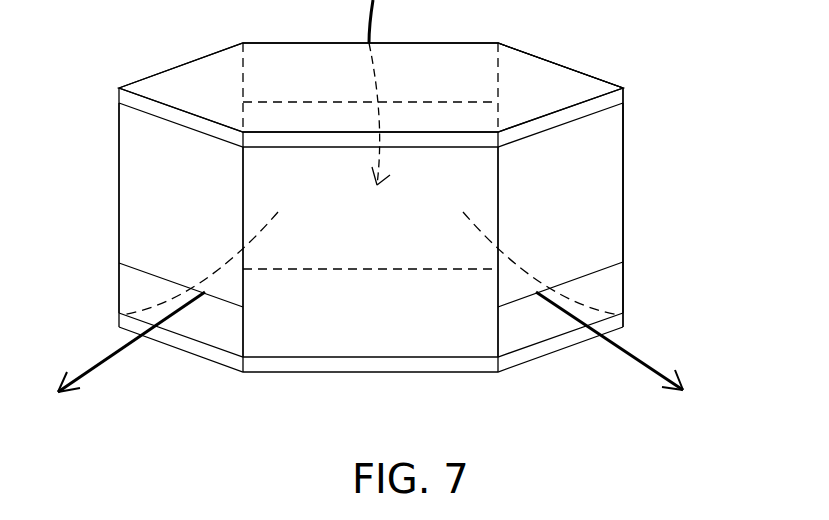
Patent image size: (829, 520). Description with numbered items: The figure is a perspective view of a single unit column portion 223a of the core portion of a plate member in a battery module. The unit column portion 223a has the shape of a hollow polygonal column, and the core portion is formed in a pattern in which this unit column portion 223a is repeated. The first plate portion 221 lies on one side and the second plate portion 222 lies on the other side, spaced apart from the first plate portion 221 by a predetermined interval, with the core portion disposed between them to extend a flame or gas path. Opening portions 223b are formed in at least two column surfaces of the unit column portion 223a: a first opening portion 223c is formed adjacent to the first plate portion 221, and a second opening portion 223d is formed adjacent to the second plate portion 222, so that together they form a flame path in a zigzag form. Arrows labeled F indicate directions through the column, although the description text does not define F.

The first plate portion 221 is at (180, 117).
The second plate portion 222 is at (153, 312).
The unit column portion 223a is at (157, 192).
The opening portions 223b is at (723, 45).
The first opening portion 223c is at (435, 82).
The second opening portion 223d is at (590, 285).
The force F is at (115, 352).